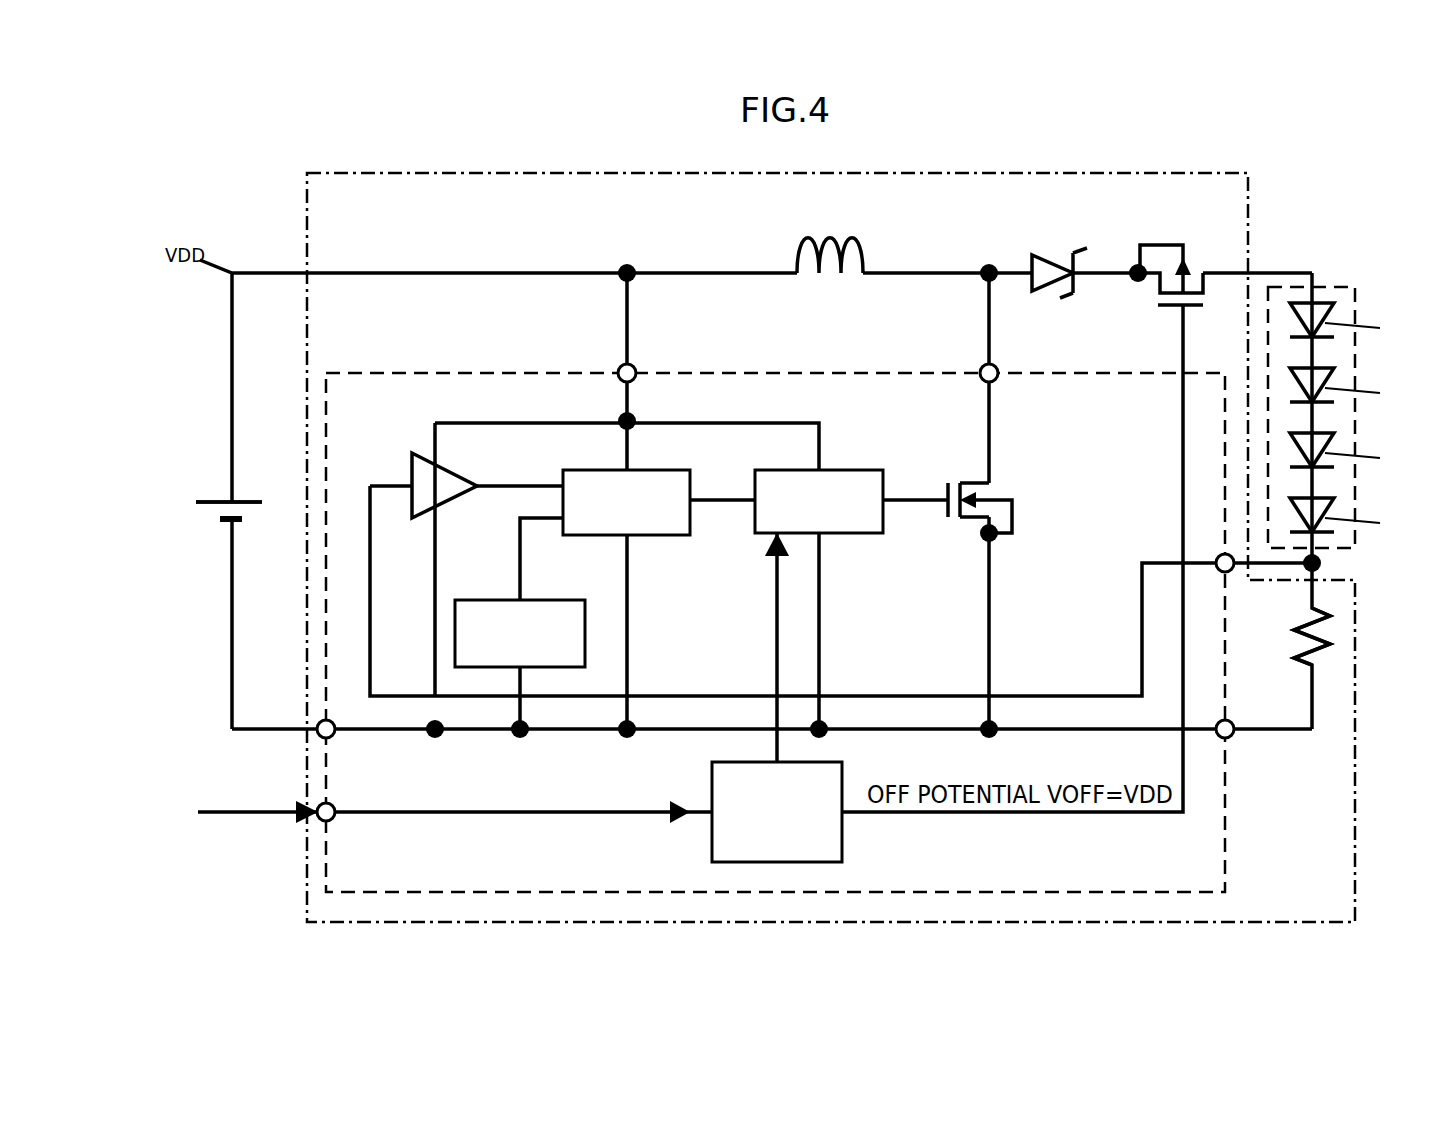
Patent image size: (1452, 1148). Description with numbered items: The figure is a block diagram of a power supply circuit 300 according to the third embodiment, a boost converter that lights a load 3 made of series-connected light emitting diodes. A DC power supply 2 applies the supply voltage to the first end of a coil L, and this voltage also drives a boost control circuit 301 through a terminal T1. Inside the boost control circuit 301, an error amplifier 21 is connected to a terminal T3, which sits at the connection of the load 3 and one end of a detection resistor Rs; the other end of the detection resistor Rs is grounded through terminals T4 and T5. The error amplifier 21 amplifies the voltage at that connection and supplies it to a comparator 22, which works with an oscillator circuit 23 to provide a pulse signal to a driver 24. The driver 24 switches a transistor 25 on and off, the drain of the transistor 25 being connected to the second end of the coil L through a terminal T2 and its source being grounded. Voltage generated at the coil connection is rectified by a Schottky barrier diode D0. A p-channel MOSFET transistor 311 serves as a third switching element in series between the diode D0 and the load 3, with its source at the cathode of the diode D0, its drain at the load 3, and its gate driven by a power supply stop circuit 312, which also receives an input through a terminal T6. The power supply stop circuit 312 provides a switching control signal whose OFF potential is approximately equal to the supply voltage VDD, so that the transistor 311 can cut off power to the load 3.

The power supply circuit 300 is at (320, 172).
The boost control circuit 301 is at (425, 372).
The load 3 is at (1337, 287).
The DC power supply 2 is at (214, 502).
The error amplifier 21 is at (412, 460).
The comparator 22 is at (583, 468).
The oscillator circuit 23 is at (498, 597).
The driver 24 is at (798, 468).
The transistor 25 is at (977, 480).
The transistor 311 is at (1162, 307).
The power supply stop circuit 312 is at (843, 792).
The coil L is at (830, 241).
The Schottky barrier diode D0 is at (1059, 256).
The detection resistor Rs is at (1333, 628).
The terminal T1 is at (609, 361).
The terminal T2 is at (973, 361).
The terminal T3 is at (1240, 587).
The terminal T4 is at (1244, 744).
The terminal T5 is at (298, 718).
The terminal T6 is at (298, 800).